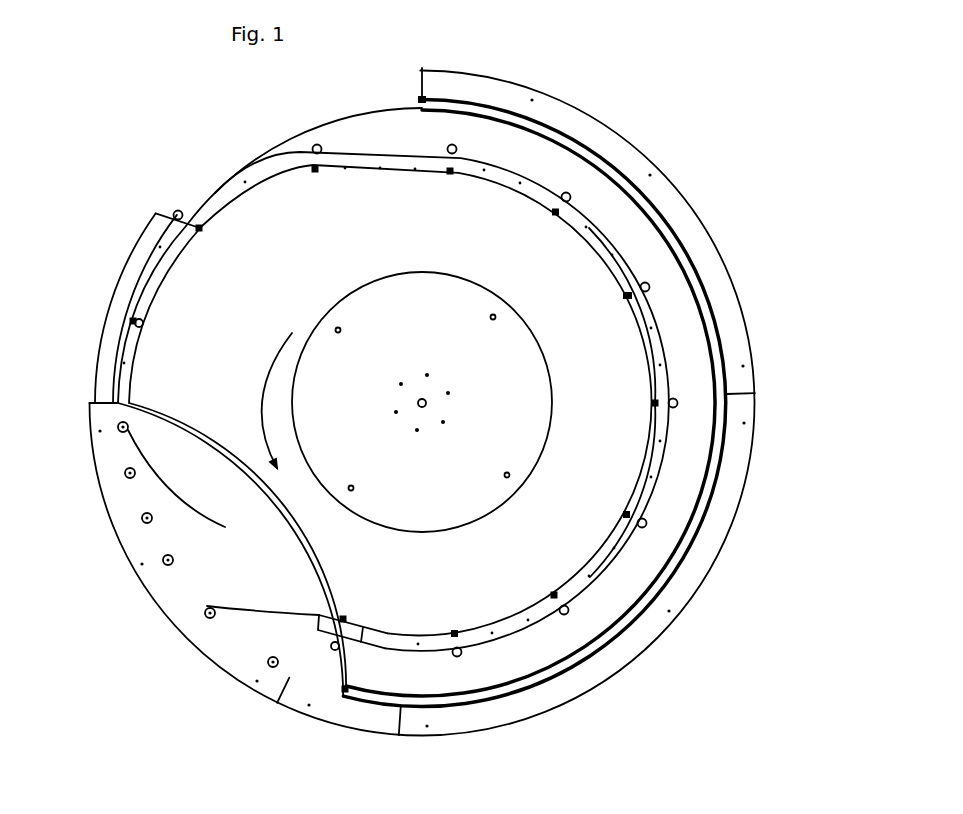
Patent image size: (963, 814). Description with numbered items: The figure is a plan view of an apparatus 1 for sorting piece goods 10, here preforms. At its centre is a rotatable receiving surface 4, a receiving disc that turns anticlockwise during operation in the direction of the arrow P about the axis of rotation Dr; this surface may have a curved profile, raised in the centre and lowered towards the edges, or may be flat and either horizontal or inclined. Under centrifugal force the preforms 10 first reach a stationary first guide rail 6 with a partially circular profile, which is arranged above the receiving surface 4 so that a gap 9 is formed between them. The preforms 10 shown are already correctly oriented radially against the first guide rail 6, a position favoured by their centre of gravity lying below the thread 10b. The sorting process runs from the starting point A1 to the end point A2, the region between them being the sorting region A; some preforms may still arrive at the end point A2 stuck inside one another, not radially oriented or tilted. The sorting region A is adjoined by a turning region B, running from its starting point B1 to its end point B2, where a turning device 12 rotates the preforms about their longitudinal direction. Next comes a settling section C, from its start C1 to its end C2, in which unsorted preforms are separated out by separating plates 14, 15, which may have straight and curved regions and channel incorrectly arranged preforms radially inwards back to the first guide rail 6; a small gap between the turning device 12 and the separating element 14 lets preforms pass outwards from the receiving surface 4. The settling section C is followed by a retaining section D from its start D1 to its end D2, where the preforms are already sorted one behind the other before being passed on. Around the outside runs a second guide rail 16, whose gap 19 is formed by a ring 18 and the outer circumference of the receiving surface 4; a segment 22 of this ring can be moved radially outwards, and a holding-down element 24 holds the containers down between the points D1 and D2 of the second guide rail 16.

The apparatus 1 is at (210, 165).
The receiving surface 4 is at (365, 126).
The first guide rail 6 is at (607, 560).
The gap 9 is at (582, 570).
The piece goods 10 is at (138, 323).
The thread 10b is at (626, 294).
The turning device 12 is at (138, 253).
The separating plate 14 is at (183, 498).
The separating plate 15 is at (237, 607).
The second guide rail 16 is at (665, 607).
The ring 18 is at (635, 640).
The gap 19 is at (178, 577).
The segment 22 is at (301, 696).
The holding-down element 24 is at (650, 208).
The sorting region A is at (524, 155).
The starting point A1 is at (328, 612).
The end point A2 is at (203, 228).
The turning region B is at (100, 335).
The starting point B1 is at (143, 211).
The end point B2 is at (88, 398).
The settling section C is at (98, 518).
The start C1 is at (122, 403).
The end C2 is at (345, 685).
The retaining section D is at (730, 463).
The start D1 is at (335, 702).
The end D2 is at (433, 92).
The arrow P is at (265, 400).
The axis of rotation Dr is at (418, 404).